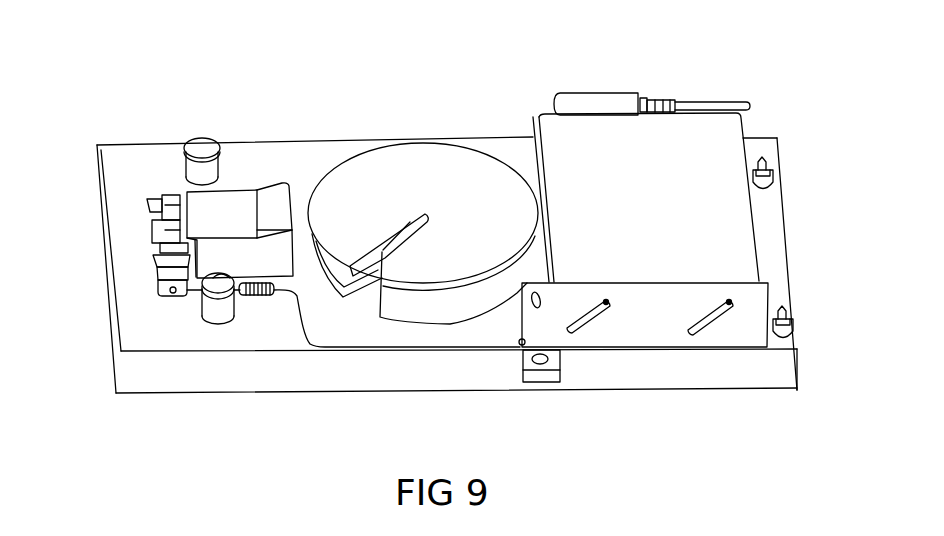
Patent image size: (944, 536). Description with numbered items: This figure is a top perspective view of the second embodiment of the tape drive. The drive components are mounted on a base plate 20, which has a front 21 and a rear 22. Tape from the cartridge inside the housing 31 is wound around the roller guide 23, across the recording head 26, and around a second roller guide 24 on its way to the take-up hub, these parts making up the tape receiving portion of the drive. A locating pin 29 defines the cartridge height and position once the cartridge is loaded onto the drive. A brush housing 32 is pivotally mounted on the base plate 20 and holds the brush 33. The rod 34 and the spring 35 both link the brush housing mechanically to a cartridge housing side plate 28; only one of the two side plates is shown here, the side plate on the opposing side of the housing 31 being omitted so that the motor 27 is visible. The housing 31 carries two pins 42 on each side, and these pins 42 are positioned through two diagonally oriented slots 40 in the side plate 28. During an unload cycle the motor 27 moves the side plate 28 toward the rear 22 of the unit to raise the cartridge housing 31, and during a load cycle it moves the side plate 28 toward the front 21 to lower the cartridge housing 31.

The base plate 20 is at (147, 160).
The front 21 is at (790, 235).
The rear 22 is at (108, 307).
The roller guide 23 is at (207, 143).
The second roller guide 24 is at (213, 310).
The recording head 26 is at (232, 208).
The motor 27 is at (605, 102).
The cartridge housing side plate 28 is at (657, 328).
The locating pin 29 is at (797, 337).
The housing 31 is at (697, 163).
The brush housing 32 is at (160, 268).
The brush 33 is at (170, 205).
The rod 34 is at (306, 325).
The spring 35 is at (250, 297).
The slot 40 is at (570, 332).
The pin 42 is at (608, 304).